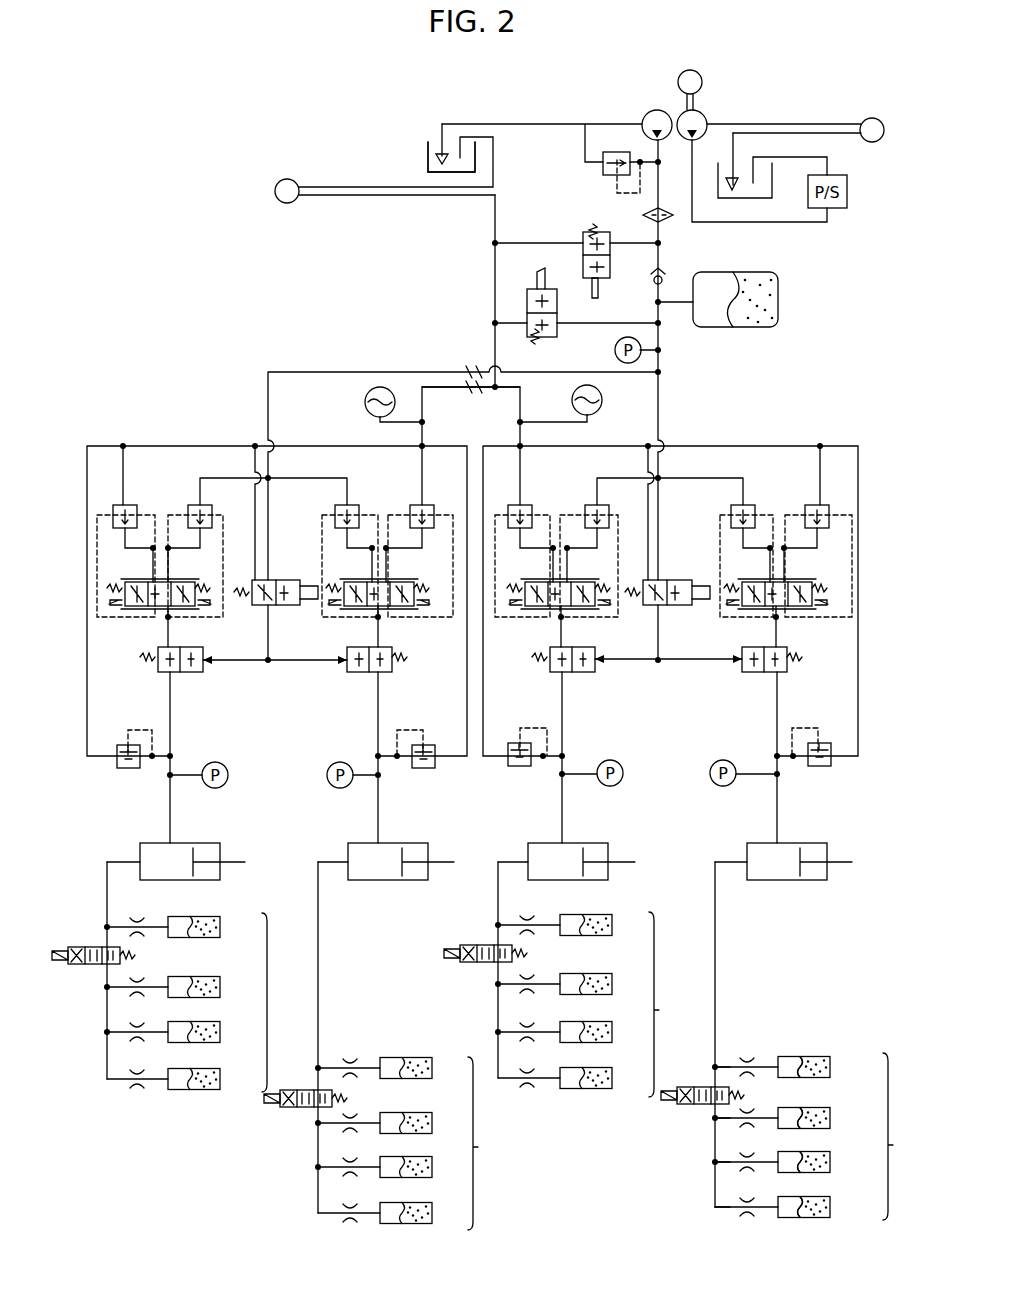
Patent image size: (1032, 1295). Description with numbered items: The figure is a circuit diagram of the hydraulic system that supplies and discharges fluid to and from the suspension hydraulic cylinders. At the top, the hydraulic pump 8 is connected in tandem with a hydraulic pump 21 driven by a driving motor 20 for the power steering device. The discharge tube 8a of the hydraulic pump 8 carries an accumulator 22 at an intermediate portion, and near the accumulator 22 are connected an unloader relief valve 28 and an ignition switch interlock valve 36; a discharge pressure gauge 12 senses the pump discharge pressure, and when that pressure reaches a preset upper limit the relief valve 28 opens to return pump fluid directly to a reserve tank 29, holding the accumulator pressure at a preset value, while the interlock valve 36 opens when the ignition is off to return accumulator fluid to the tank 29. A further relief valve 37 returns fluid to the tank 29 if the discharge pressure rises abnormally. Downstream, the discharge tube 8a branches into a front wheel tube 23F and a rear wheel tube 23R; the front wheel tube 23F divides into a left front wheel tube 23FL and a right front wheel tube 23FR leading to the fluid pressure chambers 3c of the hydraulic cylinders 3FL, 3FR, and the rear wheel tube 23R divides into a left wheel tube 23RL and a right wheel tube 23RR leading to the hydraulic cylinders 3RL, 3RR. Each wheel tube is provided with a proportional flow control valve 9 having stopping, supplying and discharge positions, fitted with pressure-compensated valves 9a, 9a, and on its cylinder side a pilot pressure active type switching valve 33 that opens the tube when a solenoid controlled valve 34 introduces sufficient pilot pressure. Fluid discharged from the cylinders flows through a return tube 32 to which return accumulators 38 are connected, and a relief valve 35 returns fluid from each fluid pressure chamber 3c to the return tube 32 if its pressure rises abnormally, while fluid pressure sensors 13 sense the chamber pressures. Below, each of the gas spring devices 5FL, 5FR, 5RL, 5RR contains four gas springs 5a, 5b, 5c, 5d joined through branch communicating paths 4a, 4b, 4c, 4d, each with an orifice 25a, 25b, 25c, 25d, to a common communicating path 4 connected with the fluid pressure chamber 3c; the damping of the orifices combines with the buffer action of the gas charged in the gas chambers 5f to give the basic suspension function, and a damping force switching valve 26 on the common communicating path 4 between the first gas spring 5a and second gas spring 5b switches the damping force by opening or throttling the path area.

The driving motor 20 is at (703, 84).
The hydraulic pump 21 is at (707, 115).
The hydraulic pump 8 is at (645, 115).
The discharge tube 8a is at (665, 349).
The reserve tank 29 is at (428, 158).
The relief valve 37 is at (603, 167).
The unloader relief valve 28 is at (583, 246).
The return tube 32 is at (495, 257).
The ignition switch interlock valve 36 is at (527, 298).
The discharge pressure gauge 12 is at (616, 350).
The accumulator 22 is at (778, 272).
The rear wheel tube 23R is at (268, 372).
The front wheel tube 23F is at (668, 418).
The return accumulator 38 is at (365, 402).
The pressure-compensated valve 9a is at (130, 503).
The proportional flow control valve 9 is at (196, 612).
The solenoid controlled valve 34 is at (285, 606).
The pilot pressure active type switching valve 33 is at (160, 672).
The right rear wheel tube 23RR is at (170, 713).
The left rear wheel tube 23RL is at (378, 713).
The right front wheel tube 23FR is at (562, 712).
The left front wheel tube 23FL is at (777, 730).
The relief valve 35 is at (128, 768).
The fluid pressure sensor 13 is at (228, 775).
The right rear hydraulic cylinder 3RR is at (220, 846).
The left rear hydraulic cylinder 3RL is at (430, 846).
The right front hydraulic cylinder 3FR is at (610, 846).
The left front hydraulic cylinder 3FL is at (827, 846).
The fluid pressure chamber 3c is at (180, 880).
The common communicating path 4 is at (103, 887).
The damping force switching valve 26 is at (57, 945).
The orifice 25a is at (137, 918).
The orifice 25b is at (142, 978).
The orifice 25c is at (140, 1023).
The orifice 25d is at (138, 1090).
The first gas spring 5a is at (220, 927).
The second gas spring 5b is at (220, 987).
The third gas spring 5c is at (220, 1032).
The fourth gas spring 5d is at (220, 1079).
The right rear gas spring device 5RR is at (285, 1002).
The left rear gas spring device 5RL is at (503, 1143).
The right front gas spring device 5FR is at (679, 1004).
The left front gas spring device 5FL is at (915, 1136).
The branch communicating path 4a is at (713, 1068).
The branch communicating path 4b is at (713, 1120).
The branch communicating path 4c is at (713, 1165).
The branch communicating path 4d is at (713, 1210).
The gas chamber 5f is at (815, 1078).